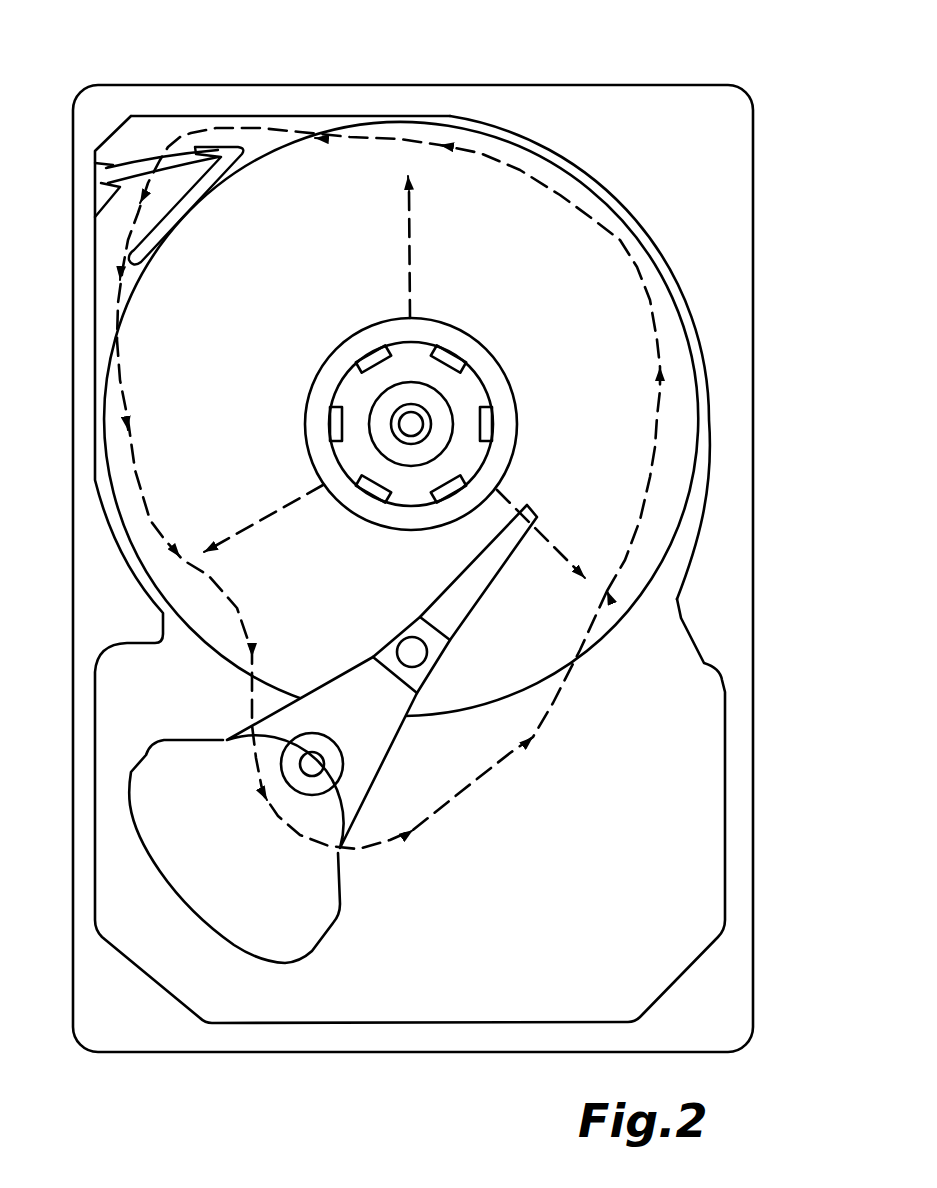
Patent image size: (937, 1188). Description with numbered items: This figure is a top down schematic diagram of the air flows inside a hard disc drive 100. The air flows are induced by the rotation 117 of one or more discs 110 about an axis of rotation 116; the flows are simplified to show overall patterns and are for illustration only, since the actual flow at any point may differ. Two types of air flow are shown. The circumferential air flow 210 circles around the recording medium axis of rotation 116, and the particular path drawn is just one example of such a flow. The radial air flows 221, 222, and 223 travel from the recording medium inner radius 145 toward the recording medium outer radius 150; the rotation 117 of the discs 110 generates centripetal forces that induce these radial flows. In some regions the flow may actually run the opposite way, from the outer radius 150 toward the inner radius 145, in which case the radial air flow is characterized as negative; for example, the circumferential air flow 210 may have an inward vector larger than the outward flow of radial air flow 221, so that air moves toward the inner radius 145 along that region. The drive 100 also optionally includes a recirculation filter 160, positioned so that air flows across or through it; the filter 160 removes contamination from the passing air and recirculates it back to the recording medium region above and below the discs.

The hard disc drive 100 is at (752, 1060).
The disc 110 is at (143, 590).
The axis of rotation 116 is at (409, 420).
The rotation 117 is at (241, 370).
The recording medium inner radius 145 is at (498, 355).
The recording medium outer radius 150 is at (676, 307).
The recirculation filter 160 is at (131, 166).
The circumferential air flow 210 is at (209, 133).
The radial air flow 221 is at (556, 556).
The radial air flow 222 is at (415, 252).
The radial air flow 223 is at (257, 522).